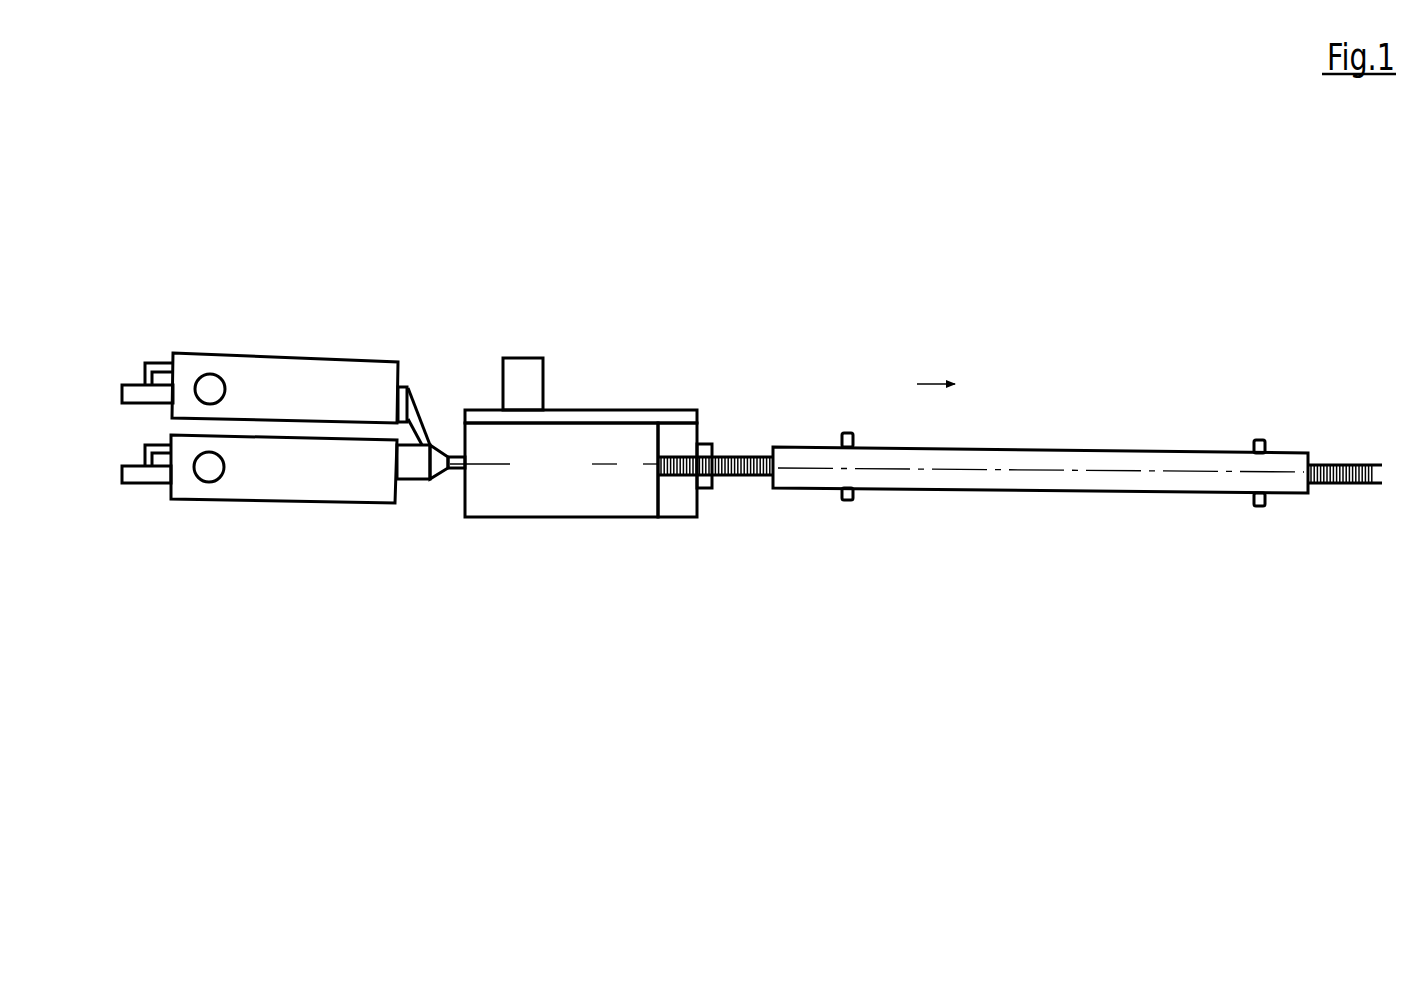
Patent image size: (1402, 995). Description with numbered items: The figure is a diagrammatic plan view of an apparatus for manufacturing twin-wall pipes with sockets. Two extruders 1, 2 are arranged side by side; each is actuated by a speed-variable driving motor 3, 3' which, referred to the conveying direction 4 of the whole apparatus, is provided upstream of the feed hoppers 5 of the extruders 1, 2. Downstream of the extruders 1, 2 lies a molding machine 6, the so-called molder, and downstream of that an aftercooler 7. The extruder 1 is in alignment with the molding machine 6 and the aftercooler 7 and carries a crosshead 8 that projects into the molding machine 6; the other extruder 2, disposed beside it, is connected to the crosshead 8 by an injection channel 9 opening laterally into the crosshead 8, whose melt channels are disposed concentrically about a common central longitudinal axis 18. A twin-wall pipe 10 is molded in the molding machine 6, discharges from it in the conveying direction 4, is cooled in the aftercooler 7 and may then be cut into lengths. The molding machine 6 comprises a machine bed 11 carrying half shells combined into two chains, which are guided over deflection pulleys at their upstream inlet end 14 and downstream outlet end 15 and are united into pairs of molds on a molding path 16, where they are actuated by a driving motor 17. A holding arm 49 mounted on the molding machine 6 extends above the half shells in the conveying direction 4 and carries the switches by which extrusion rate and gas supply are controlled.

The extruder 1 is at (298, 481).
The extruder 2 is at (298, 405).
The speed-variable driving motor 3 is at (154, 562).
The speed-variable driving motor 3' is at (160, 320).
The conveying direction 4 is at (930, 383).
The feed hopper 5 is at (210, 385).
The molding machine 6 is at (573, 522).
The aftercooler 7 is at (1032, 495).
The crosshead 8 is at (413, 472).
The injection channel 9 is at (418, 386).
The twin-wall pipe 10 is at (740, 455).
The machine bed 11 is at (685, 500).
The inlet end 14 is at (462, 483).
The outlet end 15 is at (658, 490).
The molding path 16 is at (522, 506).
The driving motor 17 is at (528, 373).
The central longitudinal axis 18 is at (967, 469).
The holding arm 49 is at (625, 413).